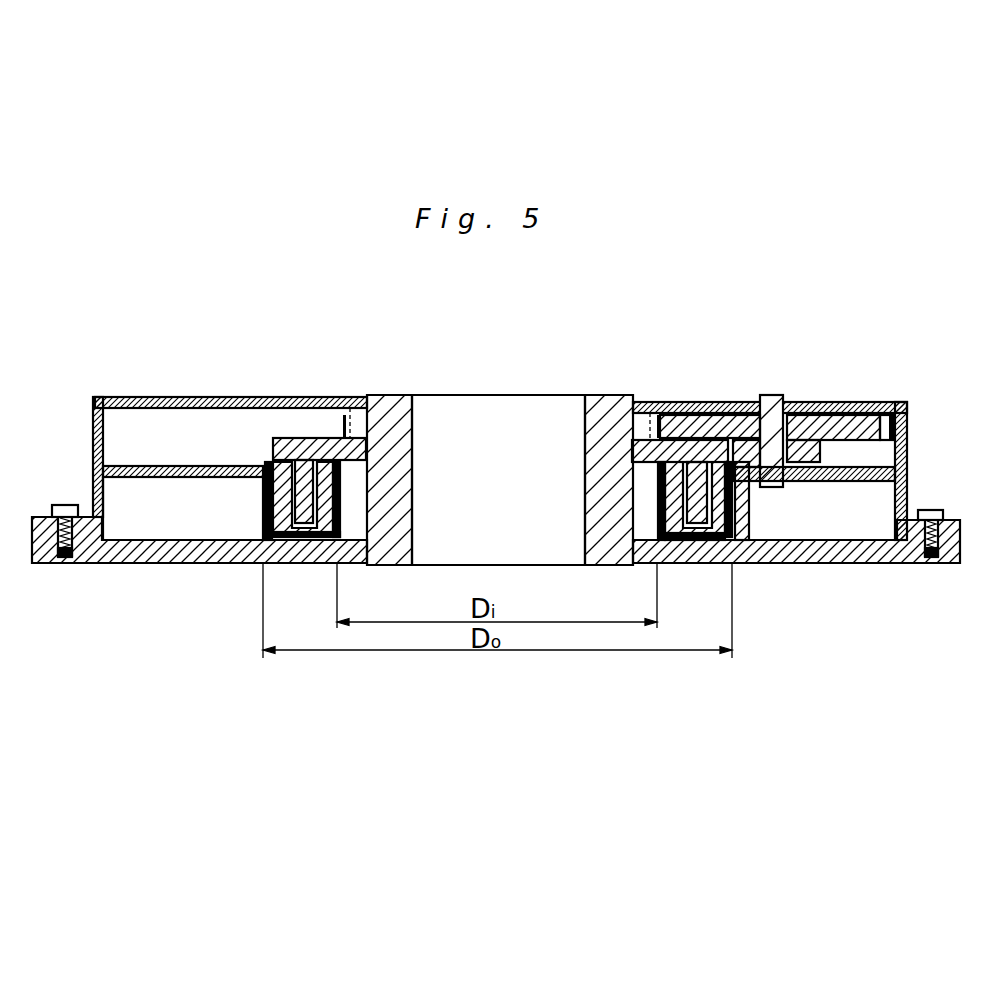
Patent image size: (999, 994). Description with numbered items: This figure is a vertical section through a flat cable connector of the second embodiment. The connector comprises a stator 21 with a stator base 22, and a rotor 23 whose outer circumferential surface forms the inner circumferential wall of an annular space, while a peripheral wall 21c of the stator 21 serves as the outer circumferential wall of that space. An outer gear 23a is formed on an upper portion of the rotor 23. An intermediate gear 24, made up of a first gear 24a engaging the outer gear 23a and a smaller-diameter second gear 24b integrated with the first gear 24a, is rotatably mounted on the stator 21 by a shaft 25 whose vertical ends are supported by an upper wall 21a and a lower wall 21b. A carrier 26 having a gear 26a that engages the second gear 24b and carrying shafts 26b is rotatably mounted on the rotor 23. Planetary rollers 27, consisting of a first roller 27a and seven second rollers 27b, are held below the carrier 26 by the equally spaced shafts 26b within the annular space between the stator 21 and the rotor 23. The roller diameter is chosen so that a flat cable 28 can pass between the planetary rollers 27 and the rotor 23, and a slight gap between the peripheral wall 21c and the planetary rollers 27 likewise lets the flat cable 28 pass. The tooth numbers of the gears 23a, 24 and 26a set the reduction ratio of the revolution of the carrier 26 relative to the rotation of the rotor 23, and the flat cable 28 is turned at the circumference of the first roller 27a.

The stator 21 is at (824, 482).
The upper wall 21a is at (807, 403).
The lower wall 21b is at (823, 481).
The peripheral wall 21c is at (748, 527).
The stator base 22 is at (850, 565).
The rotor 23 is at (388, 397).
The outer gear 23a is at (642, 423).
The intermediate gear 24 is at (887, 363).
The first gear 24a is at (866, 423).
The second gear 24b is at (900, 407).
The shaft 25 is at (775, 400).
The carrier 26 is at (305, 438).
The gear 26a is at (706, 440).
The shafts 26b is at (688, 540).
The planetary rollers 27 is at (547, 326).
The first roller 27a is at (657, 505).
The second rollers 27b is at (413, 467).
The flat cable 28 is at (318, 566).